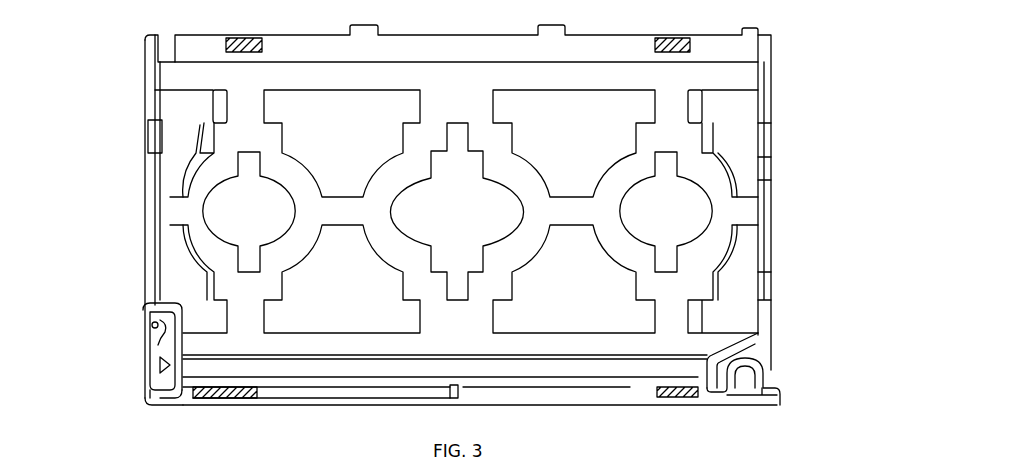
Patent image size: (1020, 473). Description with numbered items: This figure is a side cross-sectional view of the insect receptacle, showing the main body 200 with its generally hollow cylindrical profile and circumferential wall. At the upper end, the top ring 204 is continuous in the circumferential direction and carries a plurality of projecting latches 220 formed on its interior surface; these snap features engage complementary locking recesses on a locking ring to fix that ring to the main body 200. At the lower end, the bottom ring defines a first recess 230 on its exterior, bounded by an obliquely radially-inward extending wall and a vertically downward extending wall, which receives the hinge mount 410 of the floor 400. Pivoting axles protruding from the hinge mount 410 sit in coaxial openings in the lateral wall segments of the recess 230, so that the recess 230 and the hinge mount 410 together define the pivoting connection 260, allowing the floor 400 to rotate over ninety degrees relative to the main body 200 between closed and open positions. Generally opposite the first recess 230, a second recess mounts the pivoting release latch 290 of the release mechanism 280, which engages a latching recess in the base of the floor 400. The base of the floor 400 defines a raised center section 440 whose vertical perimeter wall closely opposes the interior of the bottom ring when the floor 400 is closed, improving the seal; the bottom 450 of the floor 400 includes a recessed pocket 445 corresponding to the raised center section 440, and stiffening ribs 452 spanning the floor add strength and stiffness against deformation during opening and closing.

The main body 200 is at (458, 211).
The top ring 204 is at (730, 73).
The projecting latches 220 is at (672, 44).
The first recess 230 is at (765, 343).
The pivoting connection 260 is at (745, 377).
The release mechanism 280 is at (120, 352).
The release latch 290 is at (152, 335).
The floor 400 is at (182, 392).
The raised center section 440 is at (633, 383).
The bottom 450 is at (677, 392).
The recessed pocket 445 is at (345, 393).
The stiffening ribs 452 is at (455, 390).
The hinge mount 410 is at (753, 373).